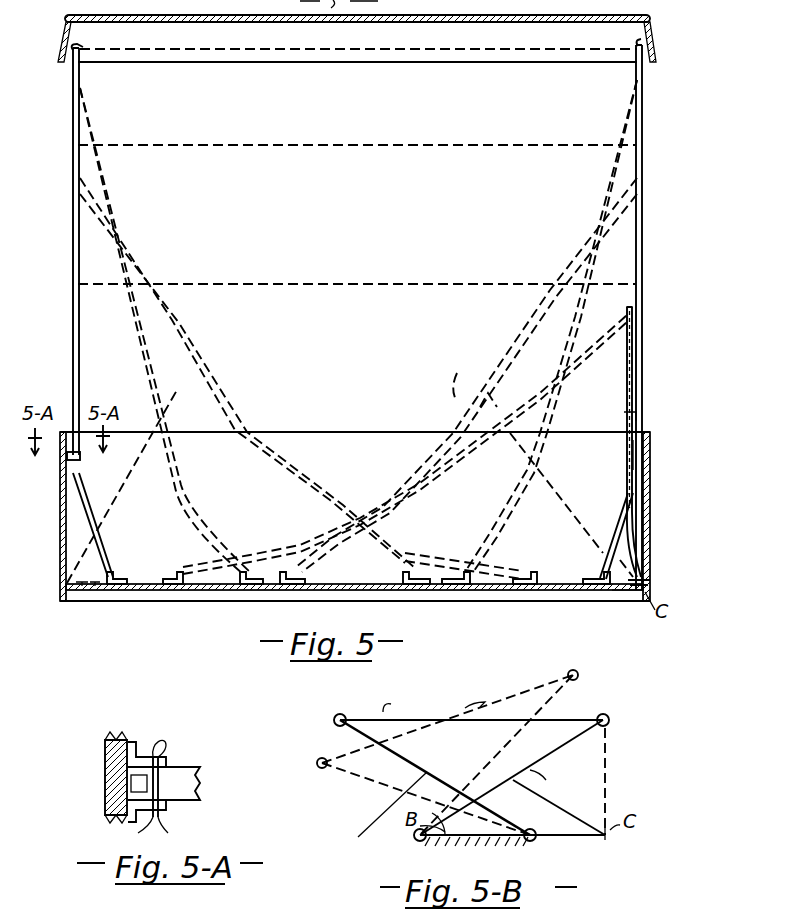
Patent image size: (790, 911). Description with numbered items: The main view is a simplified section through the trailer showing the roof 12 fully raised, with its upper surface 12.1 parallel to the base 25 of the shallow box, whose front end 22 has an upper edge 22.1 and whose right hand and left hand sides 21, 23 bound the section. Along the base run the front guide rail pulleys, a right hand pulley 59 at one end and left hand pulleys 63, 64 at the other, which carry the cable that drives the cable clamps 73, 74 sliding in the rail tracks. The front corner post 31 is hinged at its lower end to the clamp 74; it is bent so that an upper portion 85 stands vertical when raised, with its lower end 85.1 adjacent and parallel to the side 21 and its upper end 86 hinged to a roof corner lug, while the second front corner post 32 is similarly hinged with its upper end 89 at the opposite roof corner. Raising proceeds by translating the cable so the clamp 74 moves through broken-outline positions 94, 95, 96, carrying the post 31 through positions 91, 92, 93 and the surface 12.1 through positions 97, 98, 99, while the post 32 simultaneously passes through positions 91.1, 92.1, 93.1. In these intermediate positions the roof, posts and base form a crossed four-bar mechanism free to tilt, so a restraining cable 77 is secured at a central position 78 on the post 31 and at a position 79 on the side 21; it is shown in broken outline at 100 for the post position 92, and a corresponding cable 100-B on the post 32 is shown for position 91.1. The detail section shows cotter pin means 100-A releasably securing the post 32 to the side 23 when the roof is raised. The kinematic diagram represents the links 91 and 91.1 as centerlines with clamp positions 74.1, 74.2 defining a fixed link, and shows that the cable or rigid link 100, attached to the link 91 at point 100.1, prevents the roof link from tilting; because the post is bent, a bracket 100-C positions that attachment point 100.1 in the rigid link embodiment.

In FIG. 5, the roof 12 is at (195, 50).
In FIG. 5, the upper surface 12.1 is at (310, 31).
In FIG. 5, the position of upper surface 99 is at (431, 46).
In FIG. 5, the position of upper surface 98 is at (212, 148).
In FIG. 5, the position of upper surface 97 is at (301, 287).
In FIG. 5, the upper end 89 is at (91, 40).
In FIG. 5-B, the upper end 89 is at (337, 718).
In FIG. 5, the upper end 86 is at (637, 44).
In FIG. 5-B, the upper end 86 is at (610, 714).
In FIG. 5, the front corner post 32 is at (73, 241).
In FIG. 5-A, the front corner post 32 is at (175, 777).
In FIG. 5, the front corner post 31 is at (650, 200).
In FIG. 5, the front end 22 is at (353, 461).
In FIG. 5, the upper edge 22.1 is at (326, 428).
In FIG. 5, the left hand side 23 is at (60, 504).
In FIG. 5-A, the left hand side 23 is at (105, 772).
In FIG. 5, the right hand side 21 is at (664, 428).
In FIG. 5, the base 25 is at (352, 590).
In FIG. 5, the cable clamp 73 is at (130, 568).
In FIG. 5, the intermediate position of cable clamp 94 is at (180, 588).
In FIG. 5, the intermediate position of cable clamp 95 is at (291, 588).
In FIG. 5, the intermediate position of cable clamp 96 is at (454, 588).
In FIG. 5, the cable clamp 74 is at (592, 572).
In FIG. 5-B, the cable clamp position 74.1 is at (533, 840).
In FIG. 5-B, the cable clamp position 74.2 is at (418, 840).
In FIG. 5, the left hand pulley 63 is at (95, 592).
In FIG. 5, the left hand pulley 64 is at (82, 584).
In FIG. 5, the attachment position 79 is at (648, 583).
In FIG. 5, the right hand pulley 59 is at (622, 592).
In FIG. 5, the cotter pin means 100-A is at (82, 457).
In FIG. 5-A, the cotter pin means 100-A is at (184, 811).
In FIG. 5, the restraining cable 100-B is at (118, 523).
In FIG. 5-B, the restraining cable 100-B is at (376, 809).
In FIG. 5, the bracket 100-C is at (464, 408).
In FIG. 5, the cable 100 is at (561, 491).
In FIG. 5-B, the cable 100 is at (537, 787).
In FIG. 5, the point of attachment 100.1 is at (472, 373).
In FIG. 5-B, the point of attachment 100.1 is at (535, 778).
In FIG. 5, the upper portion 85 is at (634, 327).
In FIG. 5, the lower end 85.1 is at (636, 455).
In FIG. 5, the central position 78 is at (630, 308).
In FIG. 5, the restraining cable 77 is at (626, 416).
In FIG. 5, the intermediate position of post 93.1 is at (170, 447).
In FIG. 5, the intermediate position of post 93 is at (515, 488).
In FIG. 5, the intermediate position of post 91 is at (268, 558).
In FIG. 5-B, the intermediate position of post 91 is at (500, 742).
In FIG. 5, the intermediate position of post 91.1 is at (415, 546).
In FIG. 5-B, the intermediate position of post 91.1 is at (420, 761).
In FIG. 5, the intermediate position of post 92 is at (420, 494).
In FIG. 5, the intermediate position of post 92.1 is at (389, 564).